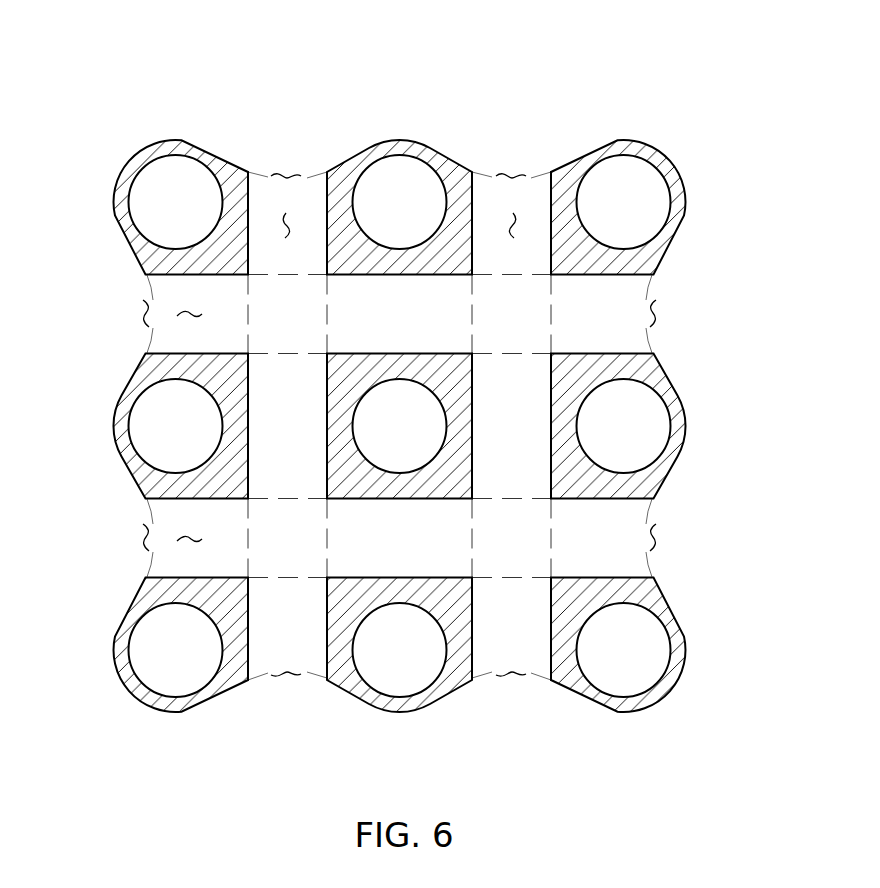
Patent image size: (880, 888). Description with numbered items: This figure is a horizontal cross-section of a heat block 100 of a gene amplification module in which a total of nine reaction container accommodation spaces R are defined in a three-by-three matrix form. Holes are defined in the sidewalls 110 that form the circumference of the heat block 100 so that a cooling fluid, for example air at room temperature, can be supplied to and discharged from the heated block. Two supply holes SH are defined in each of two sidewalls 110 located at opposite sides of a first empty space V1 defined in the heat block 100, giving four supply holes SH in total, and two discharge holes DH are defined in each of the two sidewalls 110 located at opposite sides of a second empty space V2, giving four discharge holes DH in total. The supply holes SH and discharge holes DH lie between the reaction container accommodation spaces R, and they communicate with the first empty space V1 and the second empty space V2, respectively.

The heat block 100 is at (409, 400).
The sidewalls 110 is at (240, 160).
The supply hole SH is at (286, 172).
The discharge hole DH is at (143, 313).
The first empty space V1 is at (278, 226).
The second empty space V2 is at (185, 315).
The reaction container accommodation space R is at (604, 649).